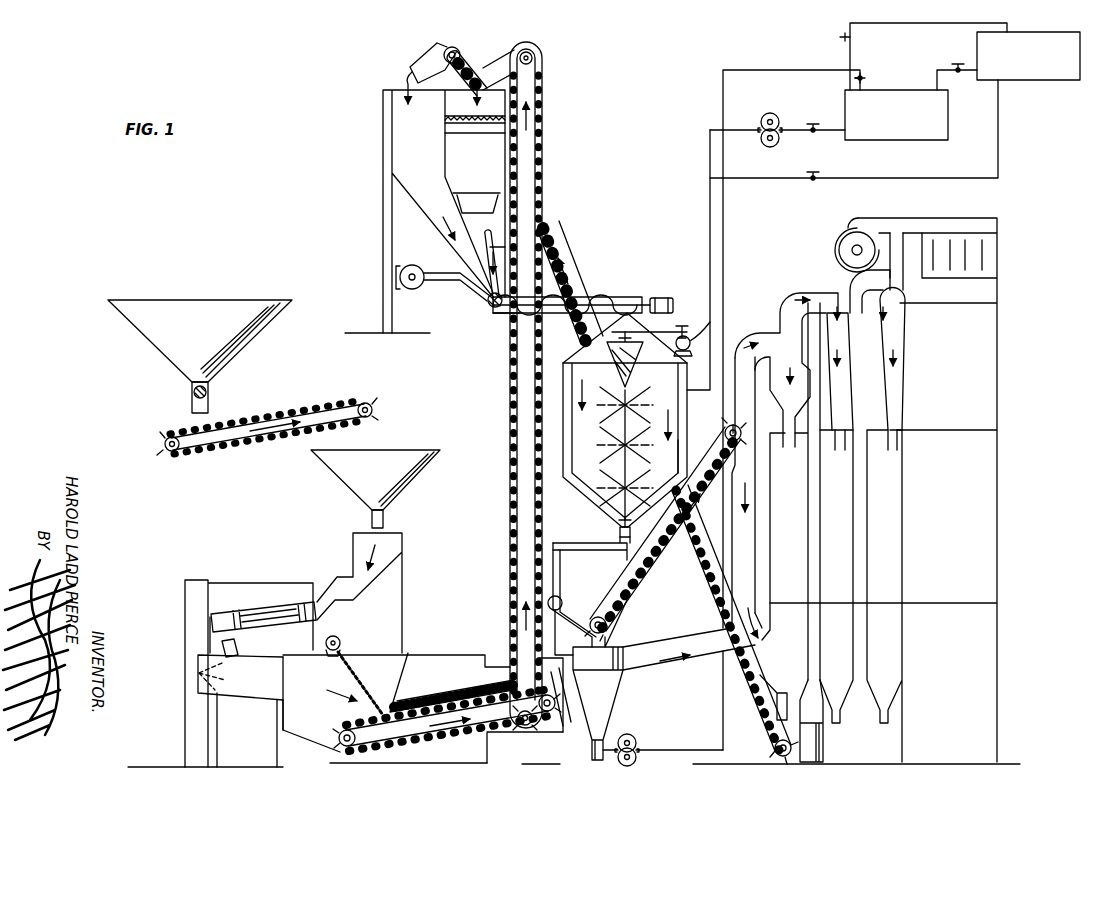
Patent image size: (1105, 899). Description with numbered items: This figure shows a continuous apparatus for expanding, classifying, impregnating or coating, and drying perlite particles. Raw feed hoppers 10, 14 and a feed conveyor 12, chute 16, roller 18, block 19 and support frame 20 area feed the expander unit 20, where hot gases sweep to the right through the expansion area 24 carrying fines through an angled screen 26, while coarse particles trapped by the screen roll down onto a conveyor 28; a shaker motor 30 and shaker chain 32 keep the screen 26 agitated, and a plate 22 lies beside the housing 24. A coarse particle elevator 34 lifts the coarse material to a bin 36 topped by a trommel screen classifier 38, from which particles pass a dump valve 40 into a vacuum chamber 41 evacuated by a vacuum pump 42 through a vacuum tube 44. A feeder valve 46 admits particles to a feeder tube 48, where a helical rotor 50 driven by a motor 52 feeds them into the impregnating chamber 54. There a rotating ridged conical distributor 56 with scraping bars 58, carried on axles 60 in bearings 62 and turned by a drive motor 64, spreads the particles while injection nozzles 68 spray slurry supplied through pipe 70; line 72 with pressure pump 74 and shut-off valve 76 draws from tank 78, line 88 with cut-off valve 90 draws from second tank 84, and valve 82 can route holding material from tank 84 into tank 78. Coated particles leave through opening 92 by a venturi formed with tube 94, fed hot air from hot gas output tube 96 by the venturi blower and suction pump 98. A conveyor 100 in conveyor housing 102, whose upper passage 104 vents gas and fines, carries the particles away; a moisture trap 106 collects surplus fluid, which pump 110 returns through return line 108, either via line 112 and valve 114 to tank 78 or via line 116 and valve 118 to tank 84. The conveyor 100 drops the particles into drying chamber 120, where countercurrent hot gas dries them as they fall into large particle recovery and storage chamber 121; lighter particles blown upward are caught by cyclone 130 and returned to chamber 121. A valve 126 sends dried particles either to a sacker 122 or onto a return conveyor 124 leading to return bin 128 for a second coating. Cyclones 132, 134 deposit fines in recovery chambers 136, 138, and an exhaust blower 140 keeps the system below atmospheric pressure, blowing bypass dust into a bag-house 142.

The feed hopper 10 is at (200, 356).
The feed conveyor 12 is at (272, 414).
The second hopper 14 is at (375, 489).
The chute 16 is at (402, 546).
The roller 18 is at (265, 605).
The deflector block 19 is at (222, 648).
The expander unit 20 is at (255, 697).
The discharge plate 22 is at (197, 673).
The expansion area 24 is at (396, 692).
The screen 26 is at (418, 664).
The conveyor 28 is at (398, 755).
The shaker motor 30 is at (334, 636).
The shaker chain 32 is at (355, 672).
The coarse particle elevator 34 is at (510, 570).
The bin 36 is at (500, 173).
The trommel screen classifier 38 is at (497, 121).
The dump valve 40 is at (480, 213).
The vacuum chamber 41 is at (497, 240).
The vacuum pump 42 is at (418, 287).
The vacuum tube 44 is at (428, 273).
The feeder valve 46 is at (489, 303).
The feeder tube 48 is at (608, 297).
The helical rotor 50 is at (530, 313).
The motor 52 is at (668, 297).
The impregnating chamber 54 is at (570, 338).
The conical distributor 56 is at (645, 342).
The scraping bars 58 is at (680, 408).
The axles 60 is at (609, 346).
The bearings 62 is at (619, 530).
The drive motor 64 is at (706, 337).
The injection nozzles 68 is at (626, 418).
The pipe 70 is at (710, 232).
The line 72 is at (710, 142).
The pressure pump 74 is at (774, 115).
The manual shut-off valve 76 is at (815, 134).
The tank 78 is at (900, 97).
The valve 82 is at (958, 74).
The second tank 84 is at (1052, 70).
The line 88 is at (898, 178).
The manual cut-off valve 90 is at (811, 182).
The opening 92 is at (625, 548).
The tube 94 is at (557, 580).
The hot gas output tube 96 is at (565, 702).
The venturi blower and suction pump 98 is at (560, 612).
The conveyor 100 is at (647, 586).
The conveyor housing 102 is at (693, 447).
The passage 104 is at (687, 455).
The moisture trap 106 is at (602, 690).
The return line 108 is at (723, 95).
The pump 110 is at (638, 738).
The line 112 is at (862, 72).
The valve 114 is at (855, 79).
The line 116 is at (952, 25).
The valve 118 is at (850, 37).
The drying chamber 120 is at (742, 528).
The large particle recovery and storage chamber 121 is at (784, 491).
The sacker 122 is at (824, 742).
The return conveyor 124 is at (753, 706).
The valve 126 is at (783, 692).
The return bin 128 is at (444, 188).
The cyclone 130 is at (800, 400).
The cyclone 132 is at (838, 378).
The cyclone 134 is at (890, 371).
The recovery and storage chamber 136 is at (836, 576).
The recovery and storage chamber 138 is at (881, 596).
The exhaust blower 140 is at (840, 250).
The bag-house 142 is at (997, 245).